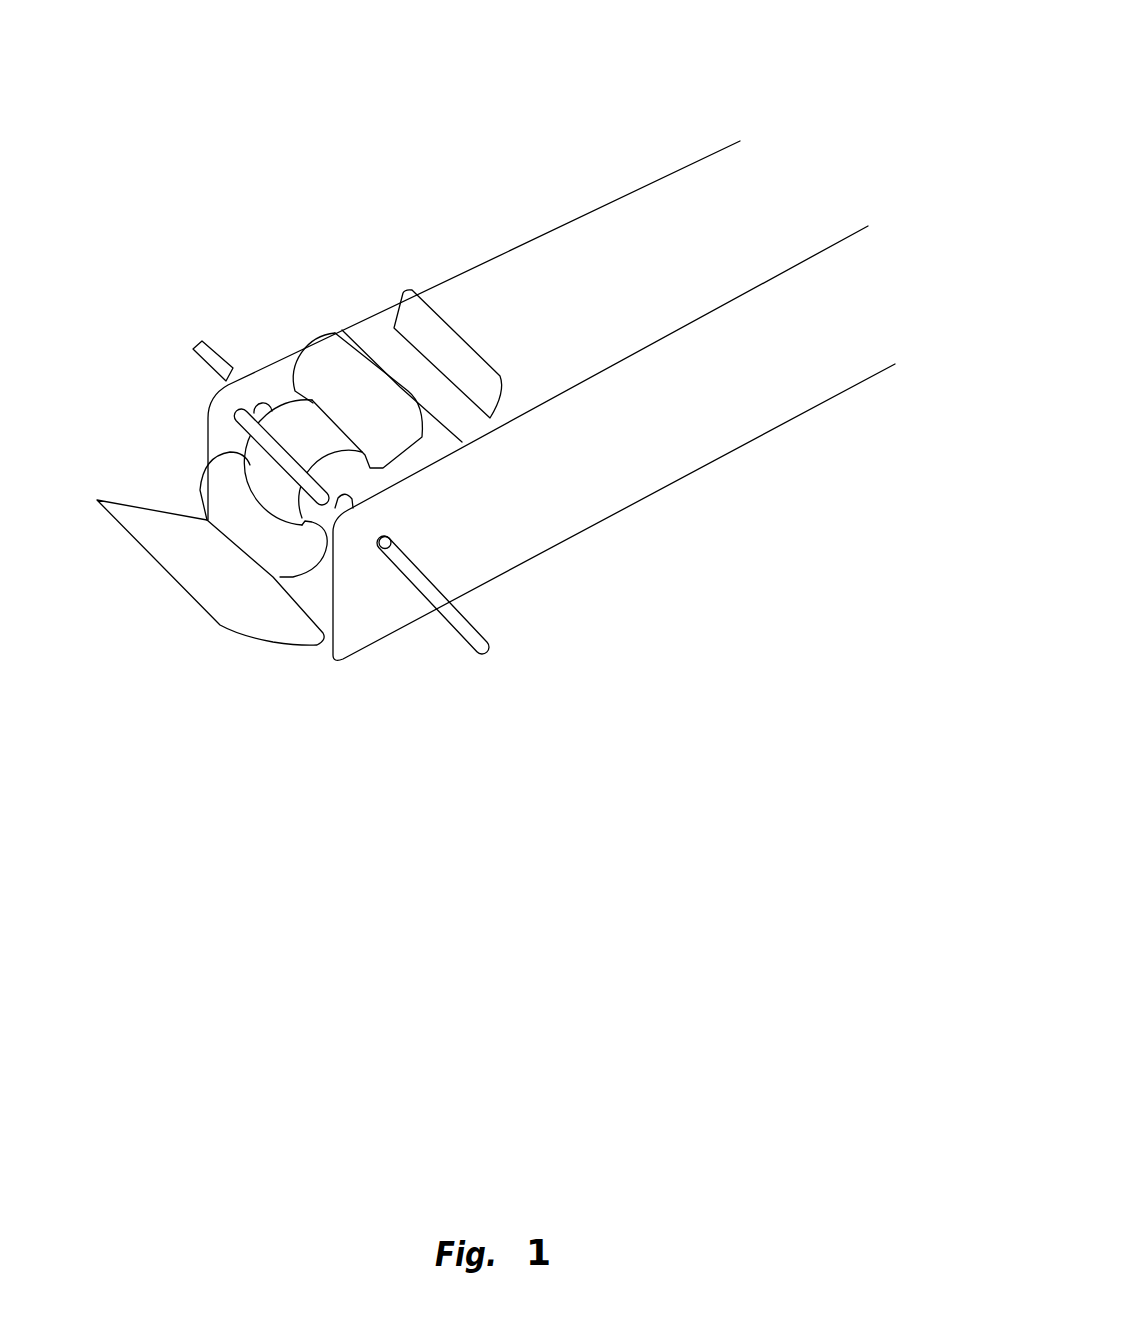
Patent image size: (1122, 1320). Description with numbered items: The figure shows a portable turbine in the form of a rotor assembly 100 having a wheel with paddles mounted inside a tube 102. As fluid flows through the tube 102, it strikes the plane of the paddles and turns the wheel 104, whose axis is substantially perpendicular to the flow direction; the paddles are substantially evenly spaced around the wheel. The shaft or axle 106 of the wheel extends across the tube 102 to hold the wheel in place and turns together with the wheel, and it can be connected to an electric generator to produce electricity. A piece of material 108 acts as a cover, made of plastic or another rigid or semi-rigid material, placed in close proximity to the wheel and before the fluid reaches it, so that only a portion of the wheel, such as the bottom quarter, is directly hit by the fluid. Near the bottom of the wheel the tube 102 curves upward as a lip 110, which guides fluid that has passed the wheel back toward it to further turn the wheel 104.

The rotor assembly 100 is at (558, 127).
The tube 102 is at (712, 396).
The wheel 104 is at (277, 523).
The axle 106 is at (473, 640).
The piece of material 108 is at (432, 303).
The lip 110 is at (207, 565).